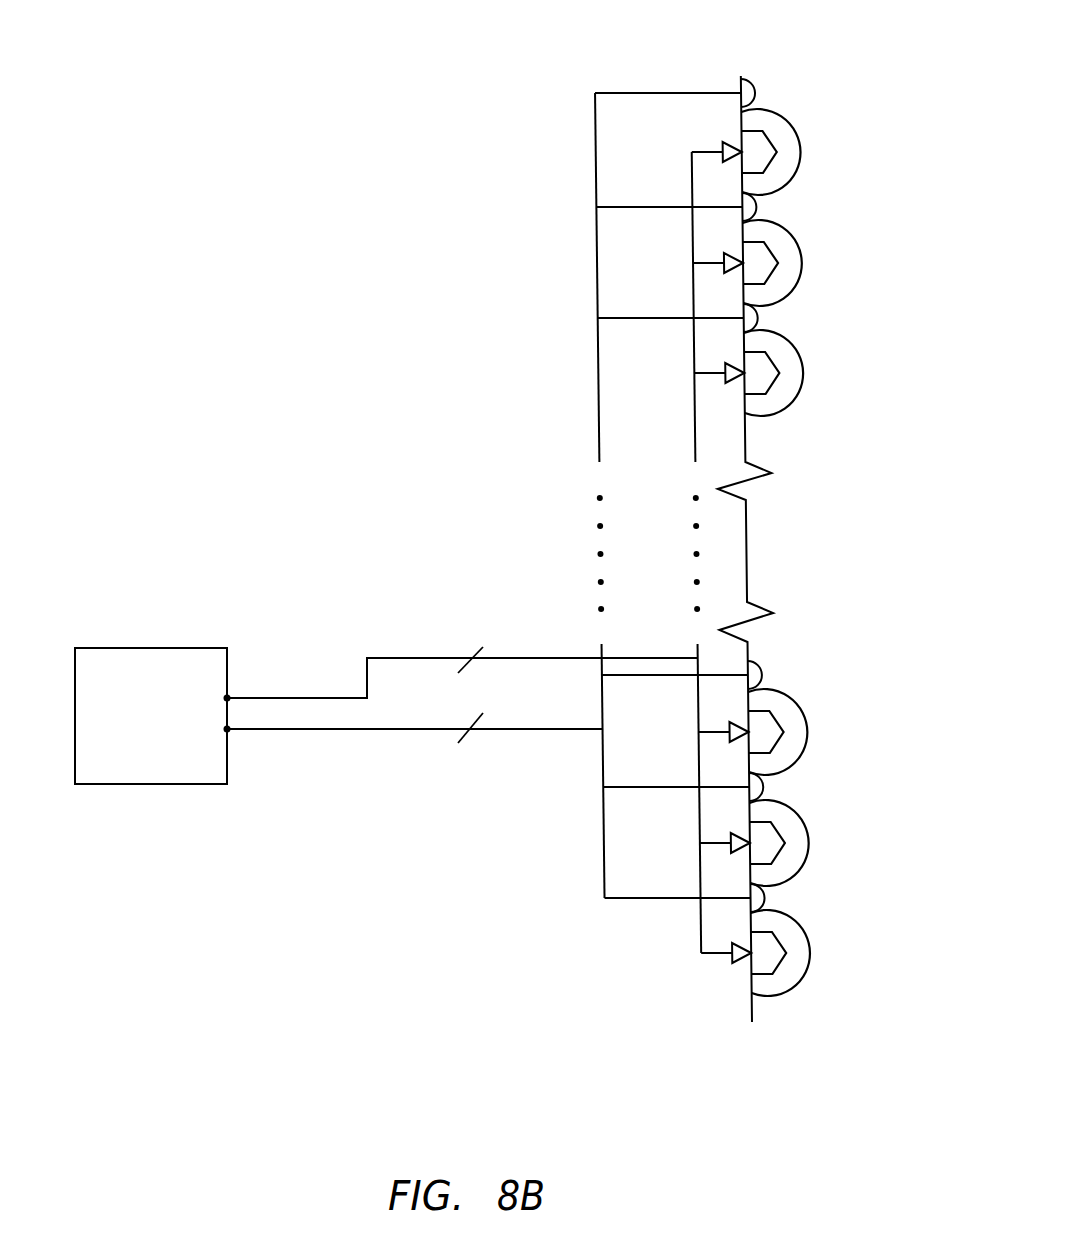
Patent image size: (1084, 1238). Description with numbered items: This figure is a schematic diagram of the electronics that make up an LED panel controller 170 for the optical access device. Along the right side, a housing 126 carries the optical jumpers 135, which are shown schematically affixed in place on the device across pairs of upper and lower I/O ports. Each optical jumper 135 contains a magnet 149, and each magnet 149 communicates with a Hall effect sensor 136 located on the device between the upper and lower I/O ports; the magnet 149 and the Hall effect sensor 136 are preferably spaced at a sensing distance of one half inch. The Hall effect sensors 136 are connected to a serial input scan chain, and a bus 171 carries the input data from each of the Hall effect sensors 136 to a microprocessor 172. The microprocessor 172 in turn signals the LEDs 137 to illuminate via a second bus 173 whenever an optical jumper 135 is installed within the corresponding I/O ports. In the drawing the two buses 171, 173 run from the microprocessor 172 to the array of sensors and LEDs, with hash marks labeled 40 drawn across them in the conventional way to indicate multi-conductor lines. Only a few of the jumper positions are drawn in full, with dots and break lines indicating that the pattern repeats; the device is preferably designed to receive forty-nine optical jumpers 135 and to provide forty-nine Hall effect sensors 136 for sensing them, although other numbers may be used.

The conductors 40 is at (474, 707).
The housing 126 is at (752, 1012).
The optical jumper 135 is at (777, 260).
The Hall effect sensor 136 is at (740, 258).
The LED 137 is at (766, 674).
The magnet 149 is at (777, 257).
The LED panel controller 170 is at (248, 257).
The bus 171 is at (443, 658).
The microprocessor 172 is at (131, 732).
The bus 173 is at (407, 729).